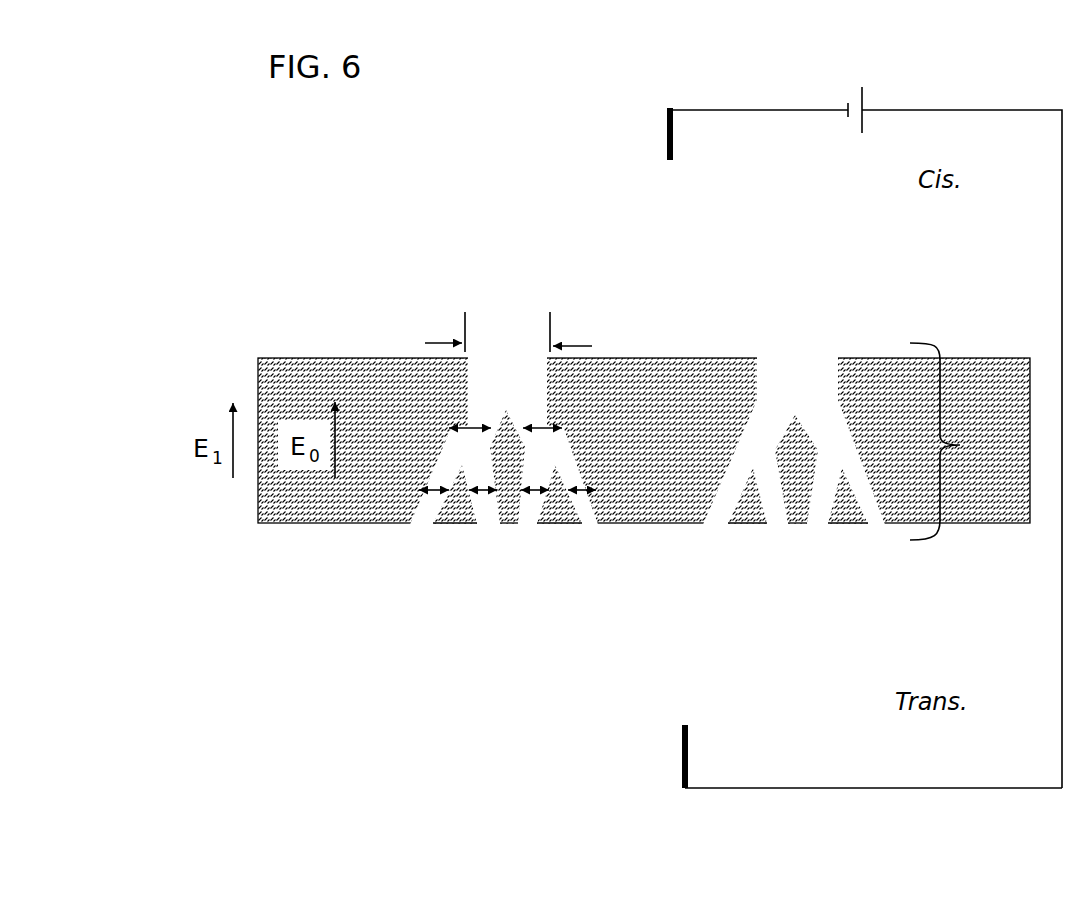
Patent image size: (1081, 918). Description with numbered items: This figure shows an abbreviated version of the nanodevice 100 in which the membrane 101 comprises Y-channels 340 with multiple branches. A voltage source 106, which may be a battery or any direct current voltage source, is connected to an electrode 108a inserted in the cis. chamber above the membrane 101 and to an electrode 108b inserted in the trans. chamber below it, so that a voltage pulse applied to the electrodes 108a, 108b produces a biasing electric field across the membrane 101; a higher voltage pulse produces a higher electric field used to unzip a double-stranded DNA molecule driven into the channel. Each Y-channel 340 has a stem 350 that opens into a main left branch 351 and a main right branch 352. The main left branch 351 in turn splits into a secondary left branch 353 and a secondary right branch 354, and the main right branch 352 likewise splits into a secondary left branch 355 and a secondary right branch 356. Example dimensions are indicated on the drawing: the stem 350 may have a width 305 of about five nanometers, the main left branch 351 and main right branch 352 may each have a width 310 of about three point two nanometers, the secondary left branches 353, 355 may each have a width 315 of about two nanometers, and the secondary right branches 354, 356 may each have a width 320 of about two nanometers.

The nanodevice 100 is at (115, 92).
The membrane 101 is at (275, 392).
The voltage source 106 is at (845, 87).
The electrode 108a is at (666, 130).
The electrode 108b is at (680, 765).
The width 305 is at (482, 332).
The width 310 is at (466, 424).
The width 315 is at (432, 493).
The width 320 is at (483, 493).
The Y-channel 340 is at (960, 445).
The stem 350 is at (505, 366).
The main left branch 351 is at (770, 430).
The main right branch 352 is at (825, 430).
The secondary left branch 353 is at (727, 495).
The secondary right branch 354 is at (778, 495).
The secondary left branch 355 is at (825, 495).
The secondary right branch 356 is at (878, 495).